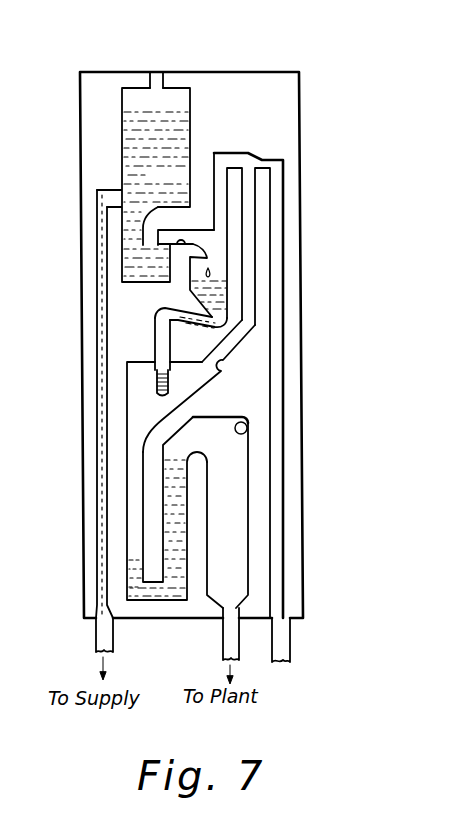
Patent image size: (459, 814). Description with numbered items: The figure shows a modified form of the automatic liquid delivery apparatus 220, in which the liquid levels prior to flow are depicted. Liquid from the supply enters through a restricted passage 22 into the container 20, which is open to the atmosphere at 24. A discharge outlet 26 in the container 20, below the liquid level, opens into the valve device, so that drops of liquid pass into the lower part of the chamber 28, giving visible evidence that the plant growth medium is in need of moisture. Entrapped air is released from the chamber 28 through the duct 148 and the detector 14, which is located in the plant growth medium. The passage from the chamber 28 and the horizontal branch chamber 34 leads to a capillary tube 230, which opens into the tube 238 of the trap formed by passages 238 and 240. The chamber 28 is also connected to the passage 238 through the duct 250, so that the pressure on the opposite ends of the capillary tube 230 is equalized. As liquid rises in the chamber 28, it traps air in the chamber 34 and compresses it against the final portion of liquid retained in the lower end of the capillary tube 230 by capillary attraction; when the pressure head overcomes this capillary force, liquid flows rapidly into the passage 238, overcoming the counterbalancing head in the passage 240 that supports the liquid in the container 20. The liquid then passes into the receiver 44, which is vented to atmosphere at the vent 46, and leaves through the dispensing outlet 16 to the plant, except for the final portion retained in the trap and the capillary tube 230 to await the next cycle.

The atmospheric opening 24 is at (157, 72).
The container 20 is at (180, 101).
The automatic liquid delivery apparatus 220 is at (295, 102).
The discharge outlet 26 is at (146, 222).
The duct 148 is at (280, 175).
The chamber 28 is at (222, 255).
The duct 250 is at (252, 307).
The restricted passage 22 is at (97, 350).
The capillary tube 230 is at (153, 340).
The chamber 34 is at (196, 318).
The tube (passage) of trap 238 is at (138, 426).
The vent 46 is at (247, 426).
The passage of trap 240 is at (185, 498).
The receiver 44 is at (242, 526).
The dispensing outlet 16 is at (223, 637).
The detector 14 is at (292, 641).